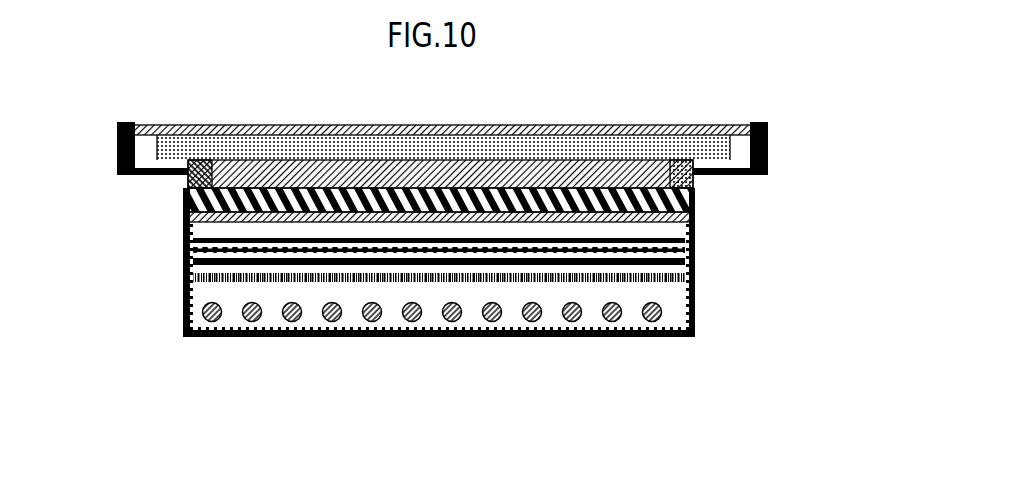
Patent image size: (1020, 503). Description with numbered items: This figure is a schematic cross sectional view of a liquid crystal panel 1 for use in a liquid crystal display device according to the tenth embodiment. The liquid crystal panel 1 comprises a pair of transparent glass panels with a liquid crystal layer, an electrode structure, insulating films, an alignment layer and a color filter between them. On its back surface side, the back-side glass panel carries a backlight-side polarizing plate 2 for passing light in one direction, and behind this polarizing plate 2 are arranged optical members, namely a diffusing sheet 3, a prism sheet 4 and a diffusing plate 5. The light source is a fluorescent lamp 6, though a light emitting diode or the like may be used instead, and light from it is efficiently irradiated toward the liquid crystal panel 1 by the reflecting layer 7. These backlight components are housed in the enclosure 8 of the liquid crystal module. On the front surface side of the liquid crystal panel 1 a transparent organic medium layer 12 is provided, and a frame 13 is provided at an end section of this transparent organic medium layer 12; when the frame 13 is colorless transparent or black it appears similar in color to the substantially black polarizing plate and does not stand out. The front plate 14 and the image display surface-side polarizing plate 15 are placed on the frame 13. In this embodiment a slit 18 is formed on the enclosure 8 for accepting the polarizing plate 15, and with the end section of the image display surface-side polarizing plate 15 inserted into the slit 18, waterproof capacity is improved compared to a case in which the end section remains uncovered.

The liquid crystal panel 1 is at (185, 202).
The backlight-side polarizing plate 2 is at (185, 215).
The diffusing sheet 3 is at (653, 242).
The prism sheet 4 is at (667, 248).
The diffusing plate 5 is at (670, 283).
The fluorescent lamp 6 is at (657, 317).
The reflecting layer 7 is at (203, 323).
The enclosure of the liquid crystal module 8 is at (185, 238).
The transparent organic medium layer 12 is at (263, 172).
The frame 13 is at (200, 180).
The front plate 14 is at (380, 150).
The image display surface-side polarizing plate 15 is at (507, 132).
The slit 18 is at (750, 125).